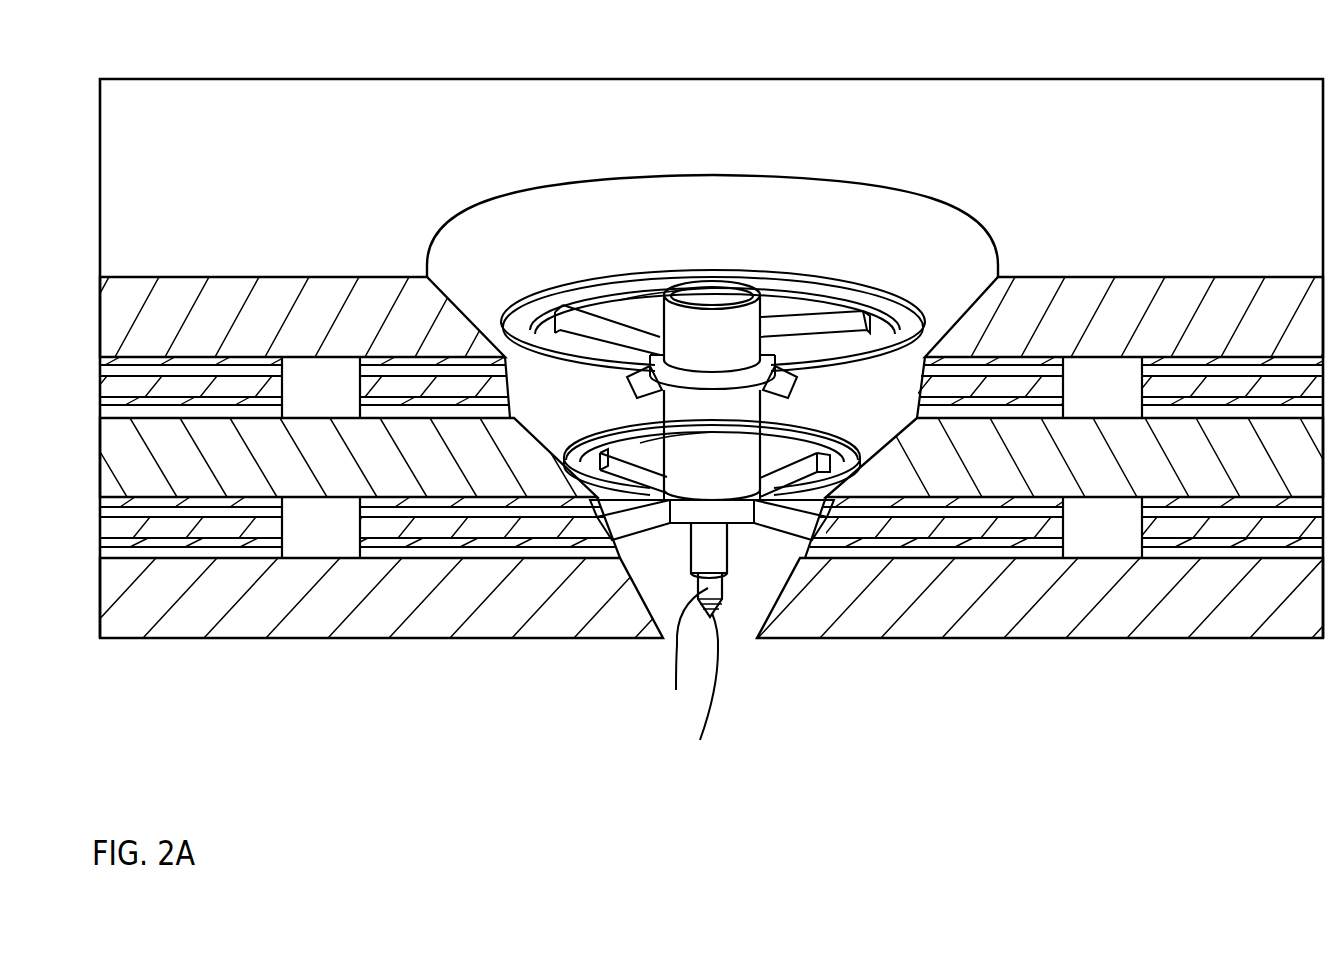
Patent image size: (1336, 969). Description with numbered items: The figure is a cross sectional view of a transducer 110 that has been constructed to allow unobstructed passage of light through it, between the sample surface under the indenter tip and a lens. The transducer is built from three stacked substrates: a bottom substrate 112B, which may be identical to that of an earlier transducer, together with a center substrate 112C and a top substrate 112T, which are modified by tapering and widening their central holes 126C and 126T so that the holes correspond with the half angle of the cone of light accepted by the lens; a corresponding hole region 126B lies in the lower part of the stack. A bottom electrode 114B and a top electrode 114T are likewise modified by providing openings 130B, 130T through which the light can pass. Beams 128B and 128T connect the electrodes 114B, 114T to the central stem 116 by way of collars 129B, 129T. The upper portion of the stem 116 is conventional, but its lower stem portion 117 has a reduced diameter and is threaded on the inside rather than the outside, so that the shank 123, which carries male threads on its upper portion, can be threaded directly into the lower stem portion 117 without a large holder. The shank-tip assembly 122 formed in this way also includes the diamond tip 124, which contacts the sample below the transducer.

The transducer 110 is at (1116, 65).
The top substrate 112T is at (204, 326).
The center substrate 112C is at (204, 468).
The bottom substrate 112B is at (214, 606).
The top electrode 114T is at (388, 377).
The bottom electrode 114B is at (418, 540).
The stem 116 is at (673, 318).
The lower stem portion 117 is at (697, 527).
The shank-tip assembly 122 is at (731, 624).
The shank 123 is at (676, 690).
The diamond tip 124 is at (700, 740).
The central hole of top substrate 126T is at (524, 280).
The central hole of center substrate 126C is at (579, 433).
The bottom flange 126B is at (758, 525).
The beams 128T is at (830, 333).
The beams 128B is at (812, 470).
The collar 129T is at (743, 380).
The collar 129B is at (743, 500).
The opening 130T is at (598, 312).
The opening 130B is at (638, 450).